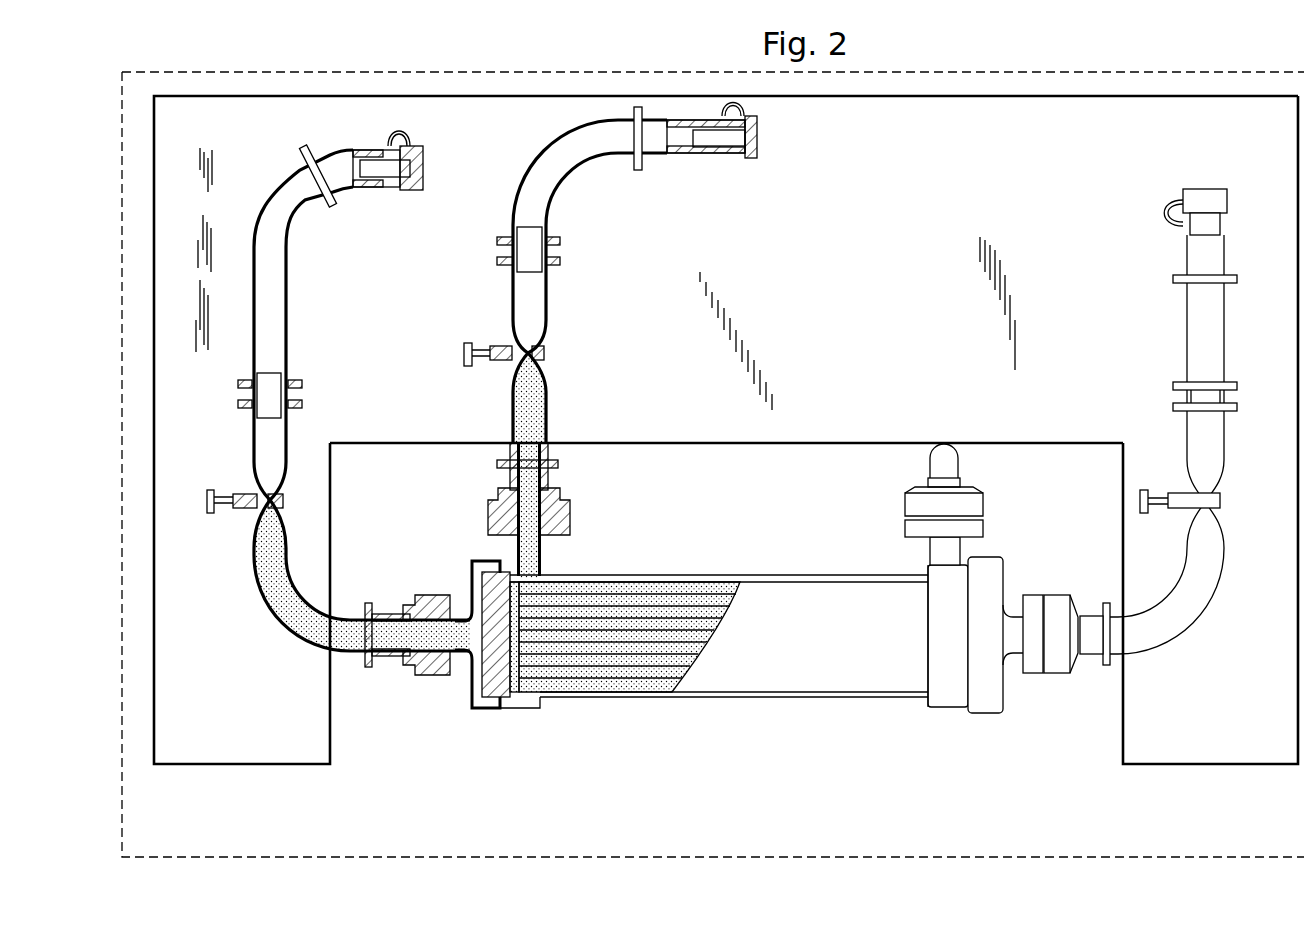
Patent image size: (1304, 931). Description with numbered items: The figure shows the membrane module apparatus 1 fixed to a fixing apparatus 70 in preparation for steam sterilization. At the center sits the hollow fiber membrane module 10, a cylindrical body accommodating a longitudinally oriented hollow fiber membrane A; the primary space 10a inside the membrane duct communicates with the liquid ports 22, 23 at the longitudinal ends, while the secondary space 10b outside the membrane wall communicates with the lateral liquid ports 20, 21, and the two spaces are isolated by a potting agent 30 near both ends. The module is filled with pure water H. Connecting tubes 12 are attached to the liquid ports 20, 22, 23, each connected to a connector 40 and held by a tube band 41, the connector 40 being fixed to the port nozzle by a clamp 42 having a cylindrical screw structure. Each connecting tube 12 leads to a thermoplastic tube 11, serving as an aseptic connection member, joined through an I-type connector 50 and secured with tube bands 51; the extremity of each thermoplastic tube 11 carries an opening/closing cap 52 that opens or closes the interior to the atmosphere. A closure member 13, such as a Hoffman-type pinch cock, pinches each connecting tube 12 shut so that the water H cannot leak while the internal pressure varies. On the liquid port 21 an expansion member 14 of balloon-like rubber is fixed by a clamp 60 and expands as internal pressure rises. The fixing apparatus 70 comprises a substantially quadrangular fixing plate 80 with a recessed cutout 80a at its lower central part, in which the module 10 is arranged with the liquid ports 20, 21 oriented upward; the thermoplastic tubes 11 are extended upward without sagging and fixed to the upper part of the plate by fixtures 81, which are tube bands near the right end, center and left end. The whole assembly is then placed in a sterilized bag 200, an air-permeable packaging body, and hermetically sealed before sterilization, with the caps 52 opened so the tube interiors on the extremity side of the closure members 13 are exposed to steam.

The membrane module apparatus 1 is at (866, 283).
The hollow fiber membrane module 10 is at (780, 575).
The primary space 10a is at (476, 702).
The secondary space 10b is at (627, 692).
The thermoplastic tube 11 is at (290, 290).
The connecting tube 12 is at (298, 548).
The closure member 13 is at (210, 515).
The expansion member 14 is at (960, 456).
The liquid port 20 is at (535, 555).
The liquid port 21 is at (930, 546).
The liquid port 22 is at (470, 582).
The liquid port 23 is at (1013, 658).
The potting agent 30 is at (518, 692).
The connector 40 is at (392, 614).
The tube band 41 is at (368, 603).
The clamp 42 is at (415, 675).
The I-type connector 50 is at (268, 385).
The tube band 51 is at (290, 383).
The opening/closing cap 52 is at (422, 165).
The clamp 60 is at (905, 510).
The fixing apparatus 70 is at (1188, 804).
The fixing plate 80 is at (255, 765).
The recessed cutout 80a is at (800, 722).
The fixture 81 is at (335, 205).
The sterilized bag 200 is at (1193, 72).
The pure water H is at (630, 590).
The hollow fiber membrane A is at (690, 600).